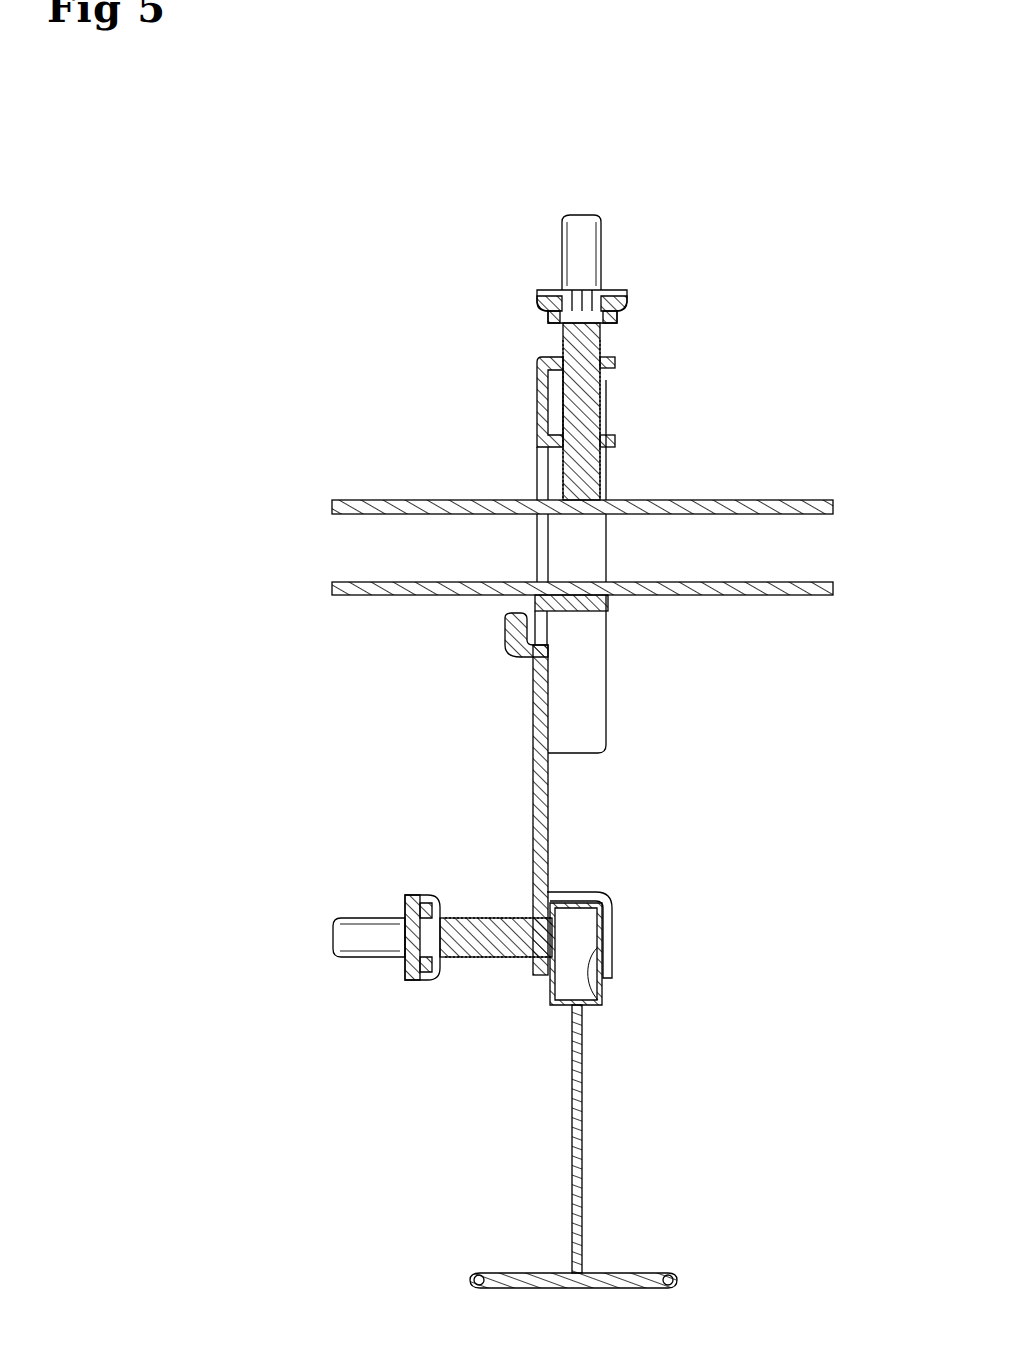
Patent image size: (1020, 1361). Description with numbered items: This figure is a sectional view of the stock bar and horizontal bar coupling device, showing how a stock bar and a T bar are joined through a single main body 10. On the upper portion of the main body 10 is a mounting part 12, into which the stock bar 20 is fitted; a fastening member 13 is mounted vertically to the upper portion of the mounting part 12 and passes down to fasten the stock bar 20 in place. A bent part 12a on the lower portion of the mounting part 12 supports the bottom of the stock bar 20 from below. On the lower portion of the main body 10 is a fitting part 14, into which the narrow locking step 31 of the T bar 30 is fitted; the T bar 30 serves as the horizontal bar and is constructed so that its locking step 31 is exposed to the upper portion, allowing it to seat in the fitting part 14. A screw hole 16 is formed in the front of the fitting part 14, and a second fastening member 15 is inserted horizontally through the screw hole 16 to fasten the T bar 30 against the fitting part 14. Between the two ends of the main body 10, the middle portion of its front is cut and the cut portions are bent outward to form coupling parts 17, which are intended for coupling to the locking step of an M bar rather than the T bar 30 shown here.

The main body 10 is at (528, 360).
The mounting part 12 is at (557, 470).
The bent part 12a is at (597, 612).
The fastening member 13 is at (602, 223).
The fitting part 14 is at (598, 1005).
The fastening member 15 is at (417, 893).
The screw hole 16 is at (528, 955).
The coupling parts 17 is at (503, 628).
The stock bar 20 is at (728, 505).
The T bar 30 is at (596, 1117).
The locking step 31 is at (612, 978).